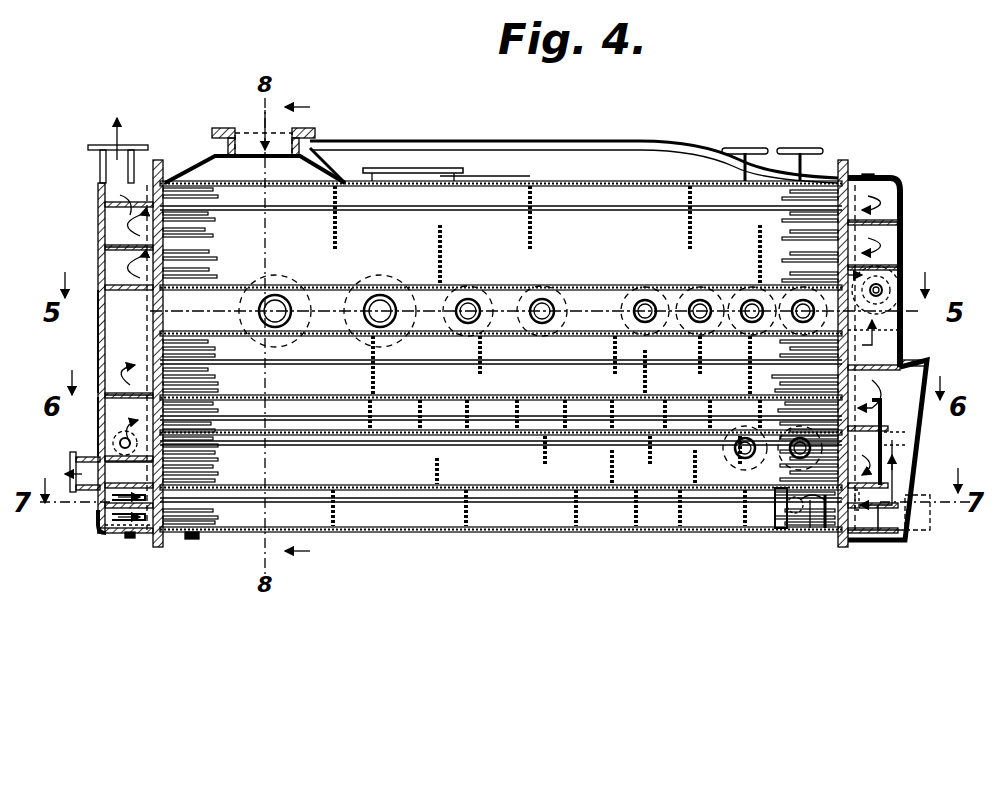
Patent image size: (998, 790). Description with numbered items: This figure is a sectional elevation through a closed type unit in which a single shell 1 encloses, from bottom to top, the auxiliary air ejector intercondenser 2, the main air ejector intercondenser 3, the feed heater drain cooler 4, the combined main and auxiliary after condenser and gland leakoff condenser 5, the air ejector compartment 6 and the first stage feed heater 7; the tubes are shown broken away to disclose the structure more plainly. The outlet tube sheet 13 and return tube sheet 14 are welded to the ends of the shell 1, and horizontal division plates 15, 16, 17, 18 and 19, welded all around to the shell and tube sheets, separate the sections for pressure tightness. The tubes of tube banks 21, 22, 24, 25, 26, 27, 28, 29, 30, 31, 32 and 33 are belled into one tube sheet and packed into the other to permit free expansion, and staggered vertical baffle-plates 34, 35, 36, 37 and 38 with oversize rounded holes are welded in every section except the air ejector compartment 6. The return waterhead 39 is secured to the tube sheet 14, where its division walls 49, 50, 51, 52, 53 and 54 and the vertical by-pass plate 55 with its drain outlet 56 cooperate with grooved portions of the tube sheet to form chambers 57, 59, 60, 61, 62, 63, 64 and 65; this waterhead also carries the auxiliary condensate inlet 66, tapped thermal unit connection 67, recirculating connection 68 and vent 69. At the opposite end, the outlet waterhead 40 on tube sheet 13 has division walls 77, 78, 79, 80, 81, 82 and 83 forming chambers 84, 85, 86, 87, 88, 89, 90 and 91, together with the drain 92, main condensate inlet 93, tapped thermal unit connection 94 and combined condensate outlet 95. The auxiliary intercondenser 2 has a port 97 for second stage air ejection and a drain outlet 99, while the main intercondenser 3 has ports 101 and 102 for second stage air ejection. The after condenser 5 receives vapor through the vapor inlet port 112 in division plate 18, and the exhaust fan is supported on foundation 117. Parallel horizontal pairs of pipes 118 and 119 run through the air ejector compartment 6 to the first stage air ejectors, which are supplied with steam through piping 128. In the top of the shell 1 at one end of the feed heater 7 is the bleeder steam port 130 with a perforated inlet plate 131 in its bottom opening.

The shell 1 is at (447, 530).
The auxiliary air ejector intercondenser 2 is at (600, 530).
The main air ejector intercondenser 3 is at (418, 492).
The feed heater drain cooler 4 is at (494, 430).
The combined main and auxiliary after condenser and gland leakoff condenser 5 is at (501, 386).
The air ejector compartment 6 is at (501, 323).
The first stage feed heater 7 is at (501, 259).
The outlet tube sheet 13 is at (168, 168).
The return tube sheet 14 is at (840, 160).
The horizontal division plate 15 is at (375, 490).
The horizontal division plate 16 is at (410, 436).
The horizontal division plate 17 is at (432, 398).
The horizontal division plate 18 is at (412, 344).
The horizontal division plate 19 is at (592, 286).
The tube bank 21 is at (810, 515).
The tube bank 22 is at (780, 495).
The tube bank 24 is at (770, 495).
The tube bank 25 is at (212, 447).
The tube bank 26 is at (205, 404).
The tube bank 27 is at (212, 376).
The tube bank 28 is at (200, 344).
The tube bank 29 is at (210, 273).
The tube bank 30 is at (210, 253).
The tube bank 31 is at (210, 232).
The tube bank 32 is at (208, 214).
The tube bank 33 is at (205, 193).
The vertical baffle-plate 34 is at (570, 514).
The vertical baffle-plate 35 is at (610, 464).
The vertical baffle-plate 36 is at (612, 409).
The vertical baffle-plate 37 is at (614, 372).
The vertical baffle-plate 38 is at (695, 242).
The return waterhead 39 is at (905, 192).
The outlet waterhead 40 is at (98, 325).
The division wall 49 is at (905, 520).
The division wall 50 is at (830, 528).
The division wall 51 is at (885, 432).
The division wall 52 is at (874, 342).
The division wall 53 is at (890, 267).
The division wall 54 is at (890, 222).
The vertical by-pass plate 55 is at (890, 445).
The drain outlet 56 is at (895, 425).
The chamber 57 is at (875, 535).
The chamber 59 is at (860, 515).
The chamber 60 is at (890, 480).
The chamber 61 is at (895, 458).
The chamber 62 is at (870, 395).
The chamber 63 is at (890, 328).
The chamber 64 is at (895, 244).
The chamber 65 is at (895, 203).
The auxiliary condensate inlet 66 is at (930, 522).
The tapped thermal unit connection 67 is at (915, 366).
The recirculating connection 68 is at (870, 273).
The vent 69 is at (870, 177).
The division wall 77 is at (100, 520).
The division wall 78 is at (100, 500).
The division wall 79 is at (98, 435).
The division wall 80 is at (112, 388).
The division wall 81 is at (140, 353).
The division wall 82 is at (110, 247).
The division wall 83 is at (110, 200).
The chamber 84 is at (118, 535).
The chamber 85 is at (100, 530).
The chamber 86 is at (129, 469).
The chamber 87 is at (130, 428).
The chamber 88 is at (130, 357).
The chamber 89 is at (108, 263).
The chamber 90 is at (108, 225).
The chamber 91 is at (125, 191).
The drain 92 is at (133, 535).
The main condensate inlet 93 is at (65, 470).
The tapped thermal unit connection 94 is at (105, 445).
The combined condensate outlet 95 is at (140, 148).
The port for second stage air ejection 97 is at (795, 510).
The drain outlet 99 is at (192, 535).
The port for second stage air ejection 101 is at (748, 460).
The port for second stage air ejection 102 is at (795, 444).
The vapor inlet port 112 is at (770, 338).
The foundation 117 is at (410, 178).
The pipes 118 is at (370, 300).
The pipes 119 is at (538, 300).
The piping 128 is at (572, 172).
The bleeder steam port 130 is at (248, 138).
The perforated inlet plate 131 is at (330, 180).